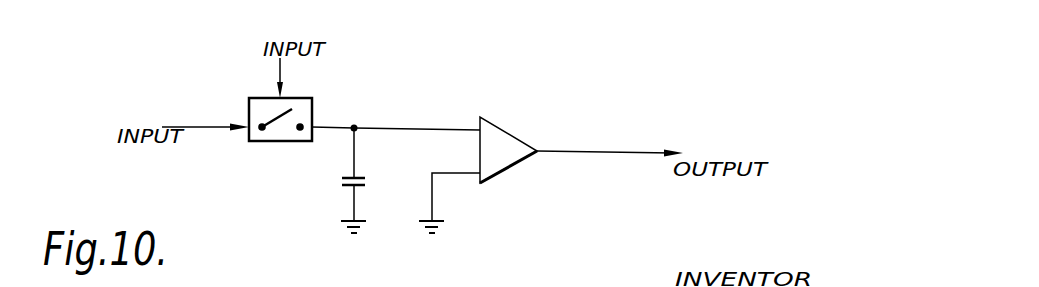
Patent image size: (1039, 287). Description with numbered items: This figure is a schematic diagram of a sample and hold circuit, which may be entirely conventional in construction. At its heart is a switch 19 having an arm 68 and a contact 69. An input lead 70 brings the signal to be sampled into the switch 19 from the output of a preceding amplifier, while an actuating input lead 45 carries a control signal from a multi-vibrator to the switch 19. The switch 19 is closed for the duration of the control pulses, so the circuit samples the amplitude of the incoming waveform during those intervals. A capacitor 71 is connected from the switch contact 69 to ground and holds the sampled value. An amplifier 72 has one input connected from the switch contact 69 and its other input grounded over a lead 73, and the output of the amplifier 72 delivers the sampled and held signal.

The switch 19 is at (288, 128).
The actuating input lead 45 is at (281, 67).
The arm 68 is at (268, 121).
The contact 69 is at (293, 142).
The input lead 70 is at (195, 120).
The capacitor 71 is at (343, 182).
The amplifier 72 is at (507, 131).
The lead 73 is at (447, 174).